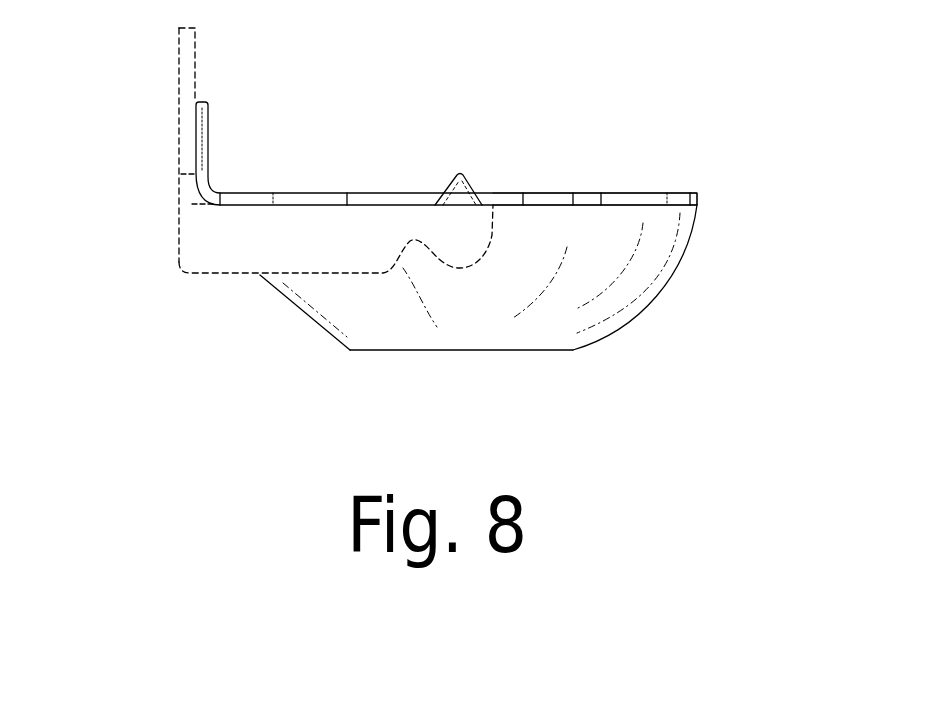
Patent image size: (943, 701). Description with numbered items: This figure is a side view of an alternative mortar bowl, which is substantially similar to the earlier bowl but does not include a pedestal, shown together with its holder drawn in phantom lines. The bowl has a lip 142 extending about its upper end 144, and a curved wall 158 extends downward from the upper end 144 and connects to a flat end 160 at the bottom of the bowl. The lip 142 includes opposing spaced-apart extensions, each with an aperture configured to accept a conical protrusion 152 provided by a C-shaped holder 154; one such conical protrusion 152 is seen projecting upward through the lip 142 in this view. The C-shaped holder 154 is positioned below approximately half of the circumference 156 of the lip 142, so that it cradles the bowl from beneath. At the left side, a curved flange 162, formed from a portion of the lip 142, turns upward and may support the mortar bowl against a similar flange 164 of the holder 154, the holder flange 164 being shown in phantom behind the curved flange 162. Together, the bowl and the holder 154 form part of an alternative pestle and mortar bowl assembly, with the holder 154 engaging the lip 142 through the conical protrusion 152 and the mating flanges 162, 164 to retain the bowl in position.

The lip 142 is at (583, 192).
The upper end 144 is at (303, 193).
The conical protrusion 152 is at (467, 178).
The C-shaped holder 154 is at (207, 247).
The circumference 156 is at (687, 233).
The curved wall 158 is at (307, 325).
The flat end 160 is at (535, 350).
The curved flange 162 is at (208, 123).
The flange 164 is at (180, 141).